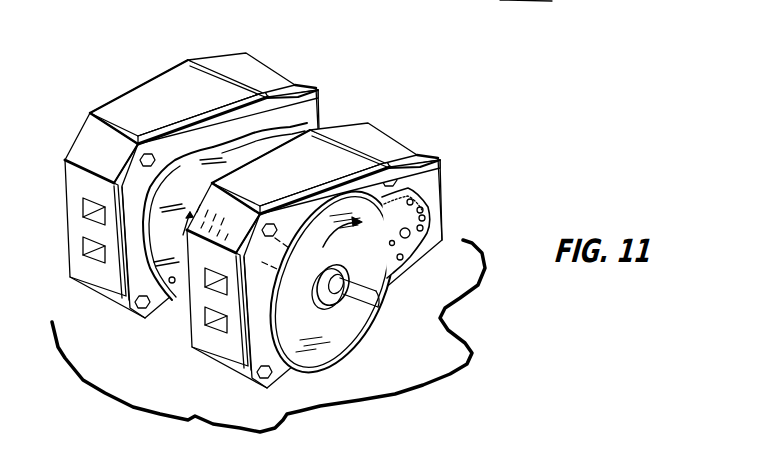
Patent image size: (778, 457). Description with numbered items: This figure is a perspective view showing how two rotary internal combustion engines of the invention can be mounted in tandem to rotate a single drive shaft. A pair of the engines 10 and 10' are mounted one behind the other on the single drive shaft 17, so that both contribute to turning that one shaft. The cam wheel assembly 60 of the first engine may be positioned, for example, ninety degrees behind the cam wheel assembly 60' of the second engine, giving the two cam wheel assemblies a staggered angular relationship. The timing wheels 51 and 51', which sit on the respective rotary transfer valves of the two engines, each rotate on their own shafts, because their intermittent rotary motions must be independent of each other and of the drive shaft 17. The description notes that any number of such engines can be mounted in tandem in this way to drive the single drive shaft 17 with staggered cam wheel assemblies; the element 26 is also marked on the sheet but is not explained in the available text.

The stepping motor 10 is at (318, 226).
The second stepping motor 10' is at (192, 159).
The motor housing cap 60 is at (347, 167).
The second motor housing cap 60' is at (205, 87).
The mounting flange 51 is at (442, 208).
The second mounting flange 51' is at (299, 108).
The output shaft 17 is at (348, 332).
The lead wire 26 is at (508, 10).